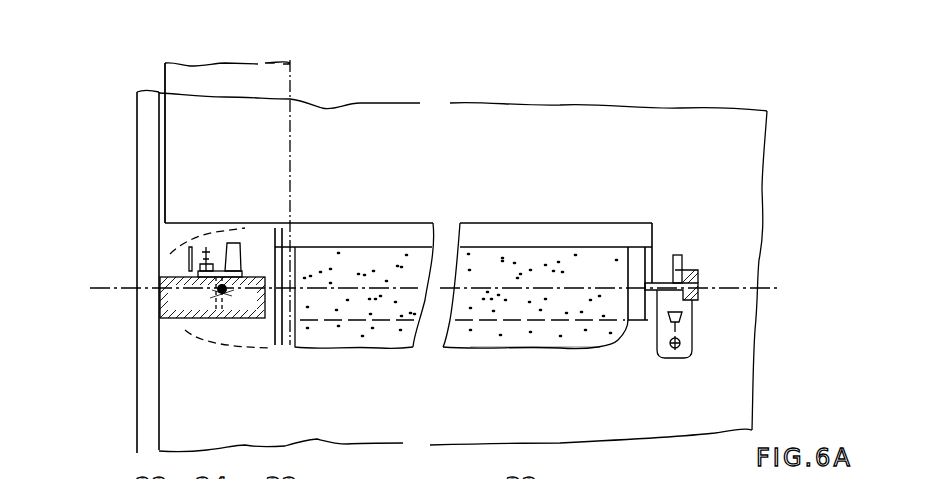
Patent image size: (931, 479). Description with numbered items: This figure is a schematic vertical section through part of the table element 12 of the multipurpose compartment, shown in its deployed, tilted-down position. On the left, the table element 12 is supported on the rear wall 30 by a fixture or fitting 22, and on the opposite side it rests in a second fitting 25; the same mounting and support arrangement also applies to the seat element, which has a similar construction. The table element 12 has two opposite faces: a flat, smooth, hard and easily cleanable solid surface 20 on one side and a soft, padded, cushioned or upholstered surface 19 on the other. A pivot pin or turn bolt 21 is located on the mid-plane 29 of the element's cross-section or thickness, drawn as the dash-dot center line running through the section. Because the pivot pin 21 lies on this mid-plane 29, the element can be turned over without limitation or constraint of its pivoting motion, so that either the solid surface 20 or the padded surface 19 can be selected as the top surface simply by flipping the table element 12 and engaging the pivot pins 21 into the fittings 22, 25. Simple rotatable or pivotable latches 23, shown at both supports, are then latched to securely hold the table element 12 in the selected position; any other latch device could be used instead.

The table element 12 is at (385, 176).
The padded surface 19 is at (553, 348).
The solid surface 20 is at (548, 225).
The pivot pin 21 is at (217, 287).
The fitting 22 is at (188, 295).
The latch 23 is at (224, 241).
The fitting 25 is at (690, 333).
The mid-plane 29 is at (110, 290).
The rear wall 30 is at (150, 382).